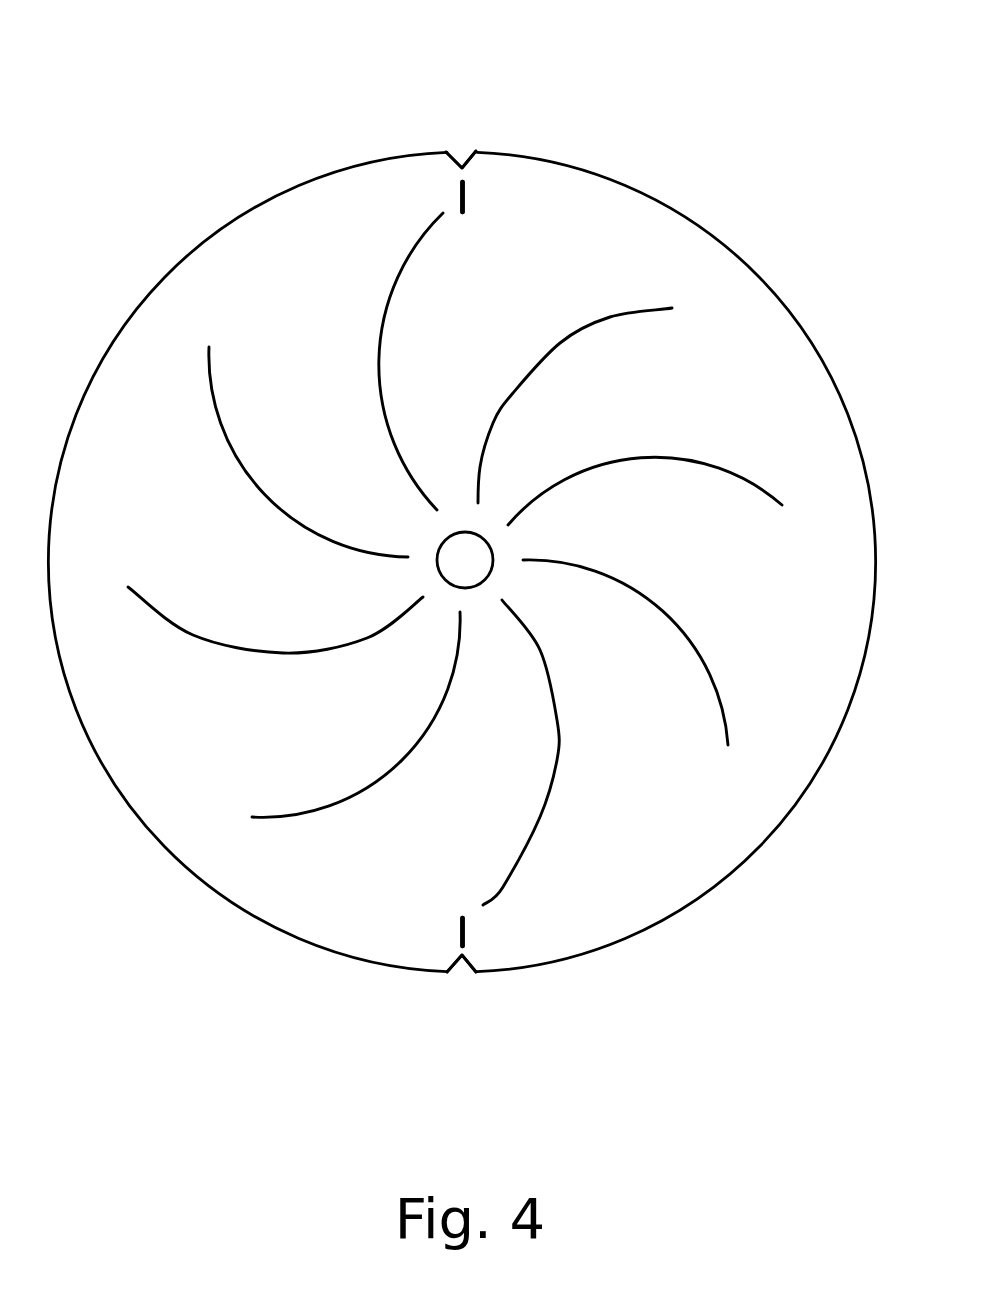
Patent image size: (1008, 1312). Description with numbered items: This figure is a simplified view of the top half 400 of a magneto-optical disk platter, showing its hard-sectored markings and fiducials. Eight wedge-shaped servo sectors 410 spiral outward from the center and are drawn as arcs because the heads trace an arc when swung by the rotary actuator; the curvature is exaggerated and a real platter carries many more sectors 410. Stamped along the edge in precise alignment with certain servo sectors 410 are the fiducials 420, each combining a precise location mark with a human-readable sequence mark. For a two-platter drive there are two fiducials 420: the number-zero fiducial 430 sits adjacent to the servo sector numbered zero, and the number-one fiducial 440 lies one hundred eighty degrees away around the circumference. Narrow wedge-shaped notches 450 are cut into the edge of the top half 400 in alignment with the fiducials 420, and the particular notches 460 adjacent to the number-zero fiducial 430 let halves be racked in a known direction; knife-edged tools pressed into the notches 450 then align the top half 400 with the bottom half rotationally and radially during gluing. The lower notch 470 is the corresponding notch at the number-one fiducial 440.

The top half 400 is at (865, 665).
The wedge-shaped servo sectors 410 is at (630, 313).
The fiducials 420 is at (470, 185).
The number 0 fiducial 430 is at (470, 193).
The number 1 fiducial 440 is at (467, 930).
The notches 450 is at (475, 147).
The notches adjacent to the number 0 fiducial 460 is at (458, 142).
The bottom notch 470 is at (468, 977).